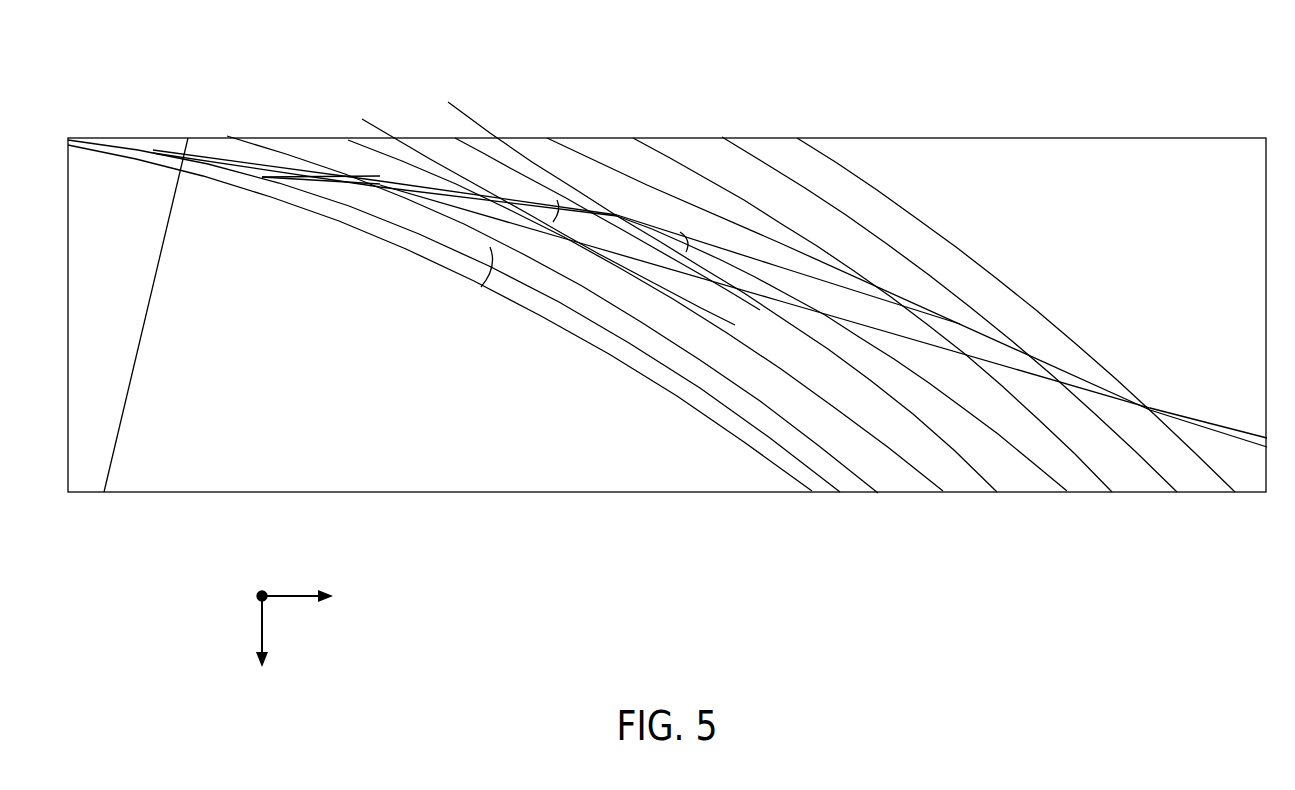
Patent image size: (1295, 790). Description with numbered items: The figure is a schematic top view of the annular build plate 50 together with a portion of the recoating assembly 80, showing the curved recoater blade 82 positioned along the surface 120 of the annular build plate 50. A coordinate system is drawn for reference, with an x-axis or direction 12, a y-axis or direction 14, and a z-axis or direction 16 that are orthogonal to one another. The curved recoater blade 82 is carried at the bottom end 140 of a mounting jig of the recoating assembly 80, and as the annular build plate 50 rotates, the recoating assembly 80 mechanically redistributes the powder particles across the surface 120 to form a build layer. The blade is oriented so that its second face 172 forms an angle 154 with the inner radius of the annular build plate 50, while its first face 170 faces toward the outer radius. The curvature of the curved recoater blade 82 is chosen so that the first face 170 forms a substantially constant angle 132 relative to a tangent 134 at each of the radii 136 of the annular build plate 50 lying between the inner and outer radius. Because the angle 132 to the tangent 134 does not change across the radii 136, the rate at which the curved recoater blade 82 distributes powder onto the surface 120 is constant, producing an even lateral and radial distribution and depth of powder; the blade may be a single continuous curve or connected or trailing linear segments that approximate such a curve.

The x-axis or direction 12 is at (254, 620).
The y-axis or direction 14 is at (293, 595).
The z-axis or direction 16 is at (261, 591).
The annular build plate 50 is at (917, 191).
The recoating assembly 80 is at (1046, 345).
The curved recoater blade 82 is at (997, 338).
The surface 120 is at (1068, 468).
The constant angle 132 is at (684, 250).
The tangent 134 is at (903, 465).
The radii 136 is at (388, 132).
The bottom end 140 is at (902, 287).
The angle 154 is at (492, 287).
The first face 170 is at (797, 267).
The second face 172 is at (848, 337).